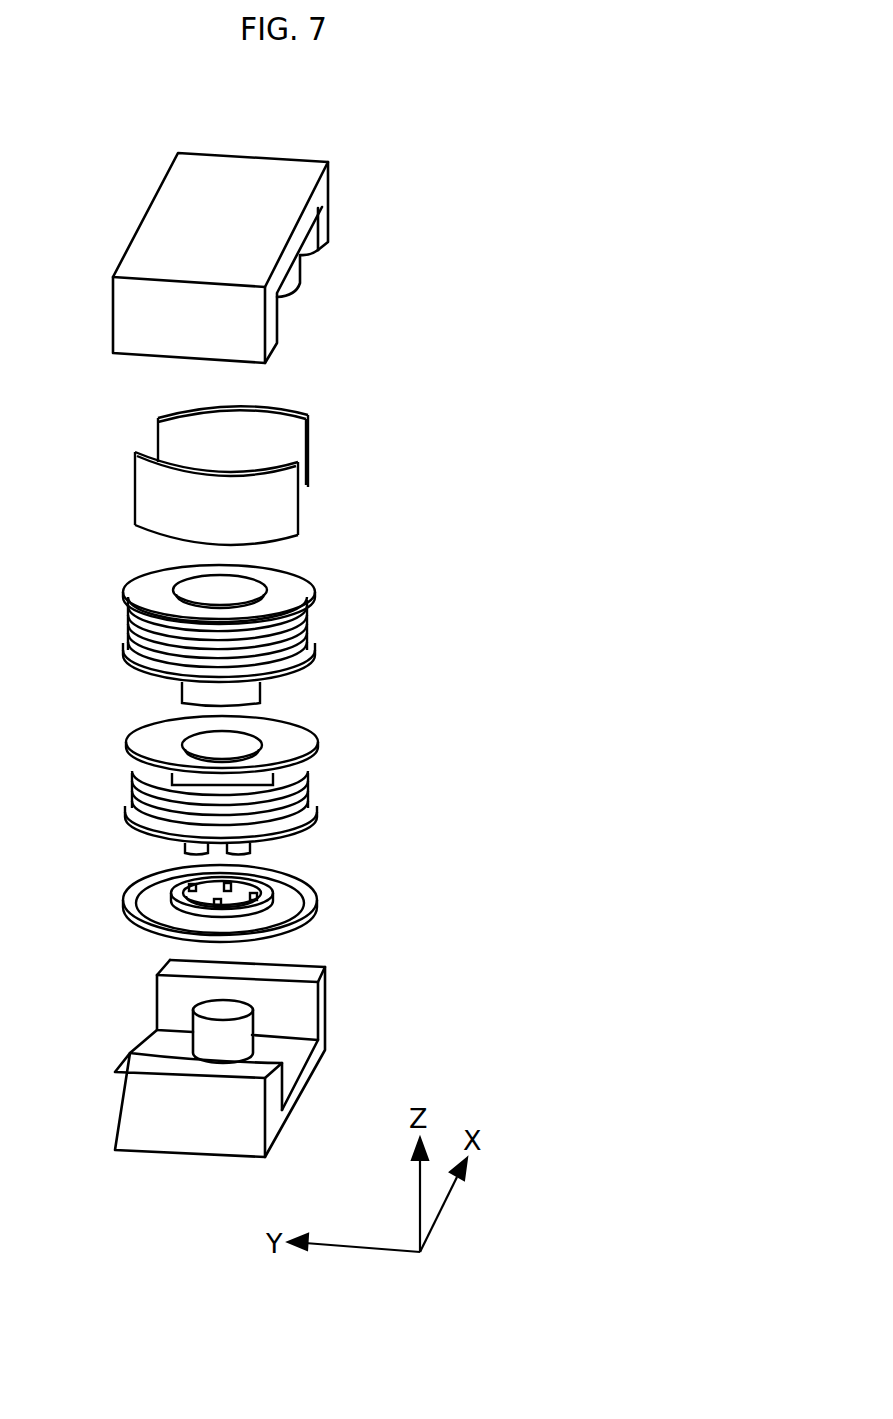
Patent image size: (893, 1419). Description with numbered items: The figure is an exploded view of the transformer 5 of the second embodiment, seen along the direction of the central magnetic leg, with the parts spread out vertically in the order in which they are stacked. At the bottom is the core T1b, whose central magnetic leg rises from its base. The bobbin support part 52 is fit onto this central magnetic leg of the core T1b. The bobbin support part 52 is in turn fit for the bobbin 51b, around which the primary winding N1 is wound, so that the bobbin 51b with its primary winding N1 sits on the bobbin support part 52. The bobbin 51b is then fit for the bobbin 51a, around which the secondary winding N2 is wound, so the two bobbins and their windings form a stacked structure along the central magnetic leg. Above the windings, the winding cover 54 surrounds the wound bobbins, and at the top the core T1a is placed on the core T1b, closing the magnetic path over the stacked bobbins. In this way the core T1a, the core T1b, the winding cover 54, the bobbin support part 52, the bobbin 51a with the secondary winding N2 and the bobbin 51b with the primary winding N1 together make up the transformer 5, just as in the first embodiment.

The transformer 5 is at (87, 150).
The core T1a is at (295, 187).
The winding cover 54 is at (308, 452).
The bobbin 51a is at (287, 583).
The secondary winding N2 is at (307, 632).
The bobbin 51b is at (282, 736).
The primary winding N1 is at (307, 788).
The bobbin support part 52 is at (317, 895).
The core T1b is at (327, 990).